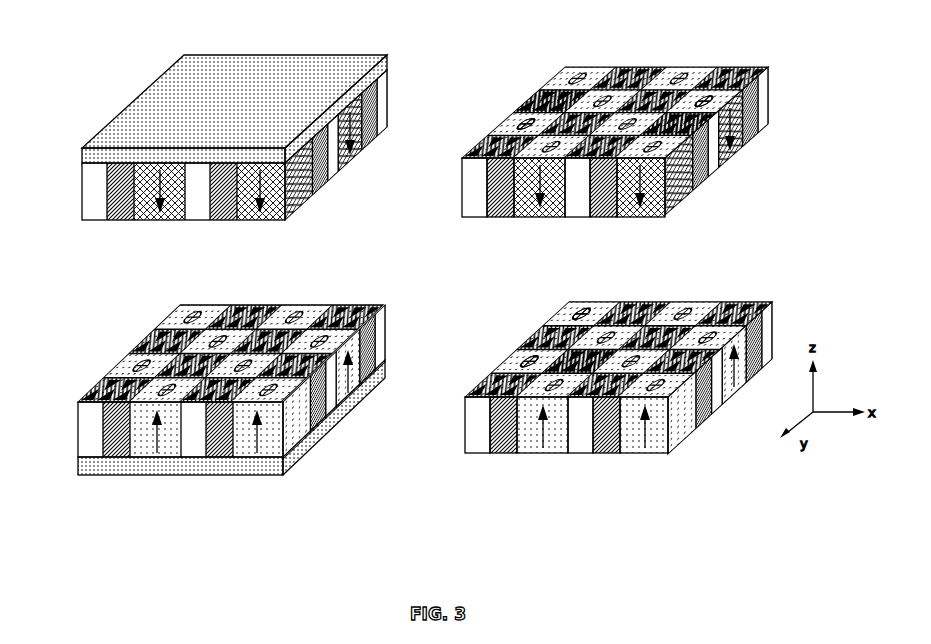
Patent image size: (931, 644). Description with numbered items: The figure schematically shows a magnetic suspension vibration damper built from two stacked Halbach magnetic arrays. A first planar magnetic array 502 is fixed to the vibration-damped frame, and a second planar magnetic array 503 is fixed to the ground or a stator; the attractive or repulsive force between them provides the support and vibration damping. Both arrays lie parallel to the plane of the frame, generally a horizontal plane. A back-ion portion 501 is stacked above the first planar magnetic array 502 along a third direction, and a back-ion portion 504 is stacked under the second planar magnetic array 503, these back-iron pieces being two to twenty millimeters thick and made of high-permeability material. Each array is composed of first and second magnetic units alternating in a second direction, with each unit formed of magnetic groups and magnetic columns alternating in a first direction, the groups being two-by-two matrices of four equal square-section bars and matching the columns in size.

The back-ion portion 501 is at (187, 68).
The first planar magnetic array 502 is at (93, 200).
The second planar magnetic array 503 is at (82, 415).
The back-ion portion 504 is at (82, 475).